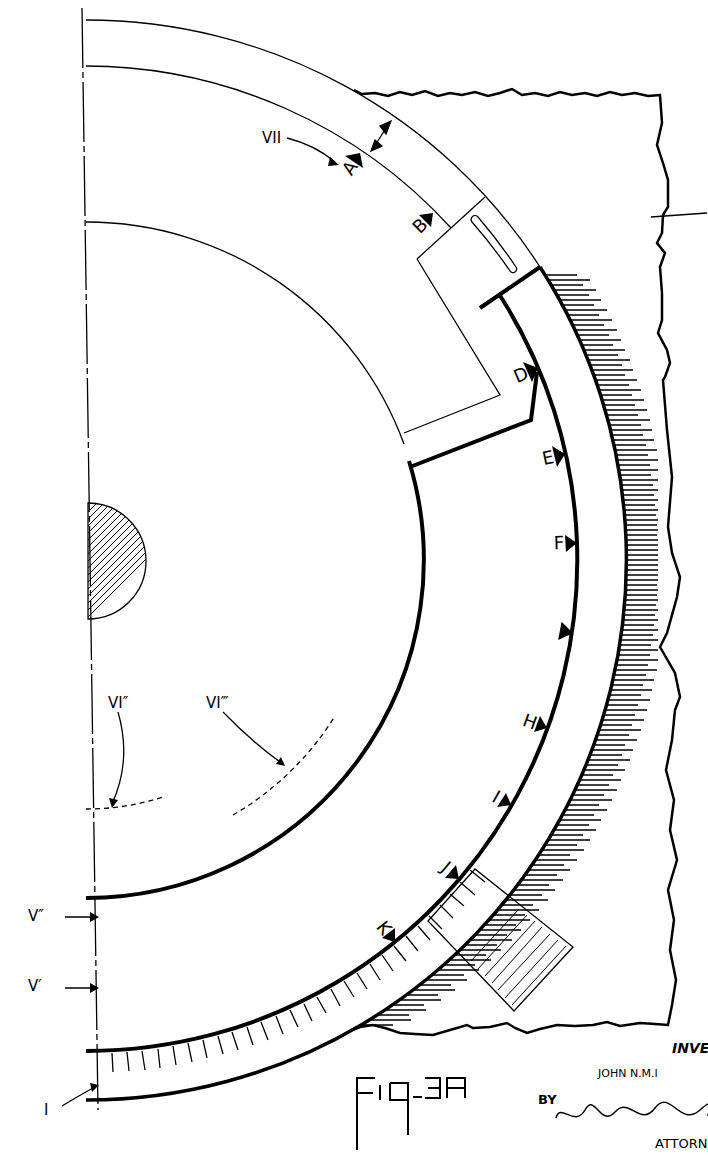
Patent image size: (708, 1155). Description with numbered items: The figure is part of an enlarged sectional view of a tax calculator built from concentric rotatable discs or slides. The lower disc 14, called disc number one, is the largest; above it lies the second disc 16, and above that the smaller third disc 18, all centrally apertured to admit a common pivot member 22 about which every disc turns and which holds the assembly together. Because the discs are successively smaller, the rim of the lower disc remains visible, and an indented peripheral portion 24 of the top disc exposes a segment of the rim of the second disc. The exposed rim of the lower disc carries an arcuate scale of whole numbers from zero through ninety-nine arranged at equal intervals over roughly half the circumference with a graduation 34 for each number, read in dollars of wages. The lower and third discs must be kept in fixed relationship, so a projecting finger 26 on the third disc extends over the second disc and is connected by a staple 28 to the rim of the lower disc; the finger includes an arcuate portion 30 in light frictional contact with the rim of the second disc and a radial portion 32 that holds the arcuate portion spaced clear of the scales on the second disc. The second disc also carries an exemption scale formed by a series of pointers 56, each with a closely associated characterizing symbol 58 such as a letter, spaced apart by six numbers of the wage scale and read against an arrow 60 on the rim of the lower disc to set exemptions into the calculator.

The lower disc 14 is at (345, 44).
The disc No. 2 16 is at (267, 530).
The third disc 18 is at (255, 560).
The common pivot member 22 is at (90, 514).
The indented peripheral portion 24 is at (545, 952).
The projecting finger 26 is at (490, 212).
The staple 28 is at (512, 248).
The arcuate portion 30 is at (472, 323).
The radial portion 32 is at (485, 430).
The graduation 34 is at (110, 1072).
The pointers 56 is at (512, 785).
The characterizing symbol 58 is at (538, 632).
The arrow 60 is at (380, 140).